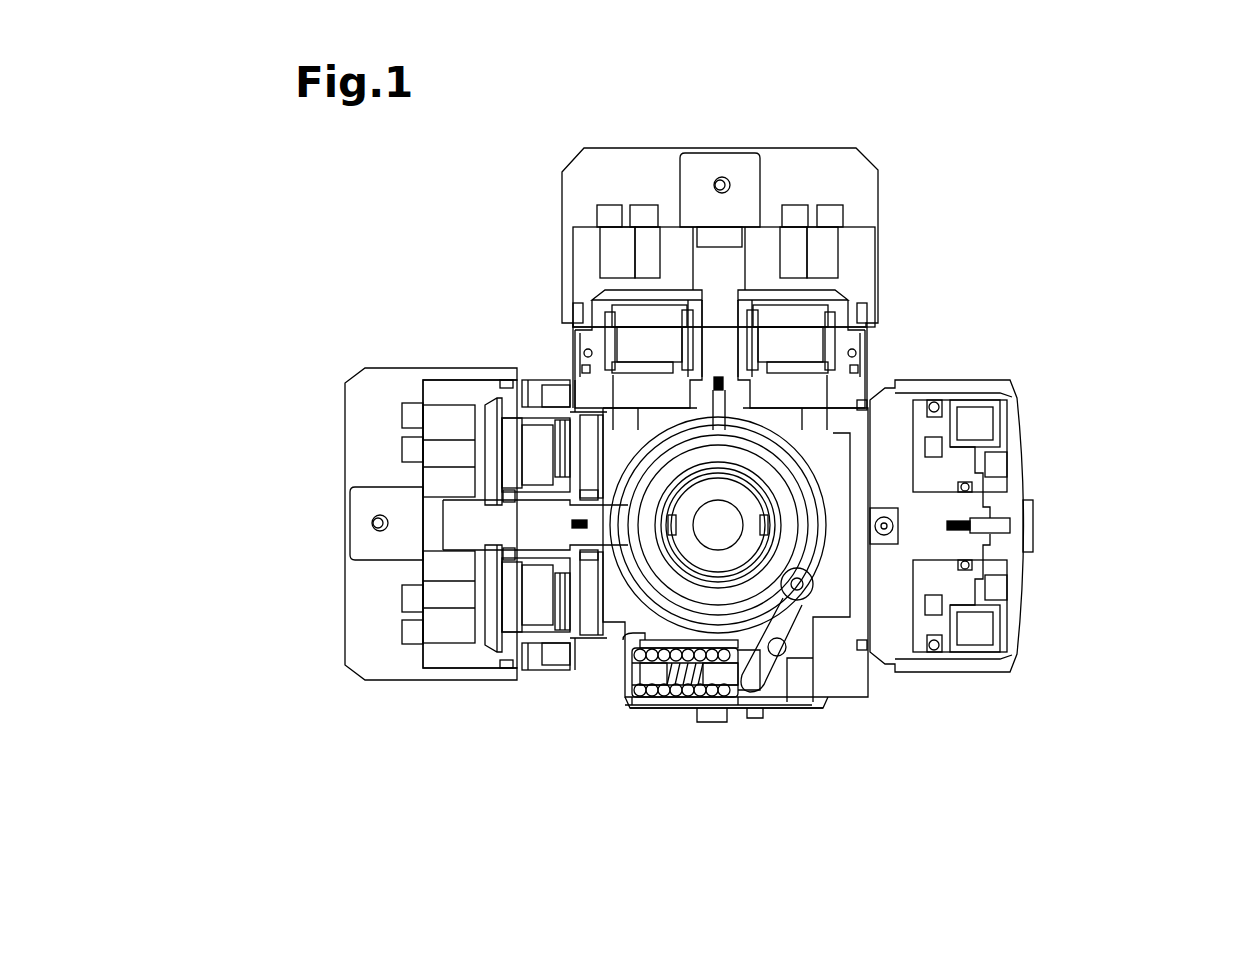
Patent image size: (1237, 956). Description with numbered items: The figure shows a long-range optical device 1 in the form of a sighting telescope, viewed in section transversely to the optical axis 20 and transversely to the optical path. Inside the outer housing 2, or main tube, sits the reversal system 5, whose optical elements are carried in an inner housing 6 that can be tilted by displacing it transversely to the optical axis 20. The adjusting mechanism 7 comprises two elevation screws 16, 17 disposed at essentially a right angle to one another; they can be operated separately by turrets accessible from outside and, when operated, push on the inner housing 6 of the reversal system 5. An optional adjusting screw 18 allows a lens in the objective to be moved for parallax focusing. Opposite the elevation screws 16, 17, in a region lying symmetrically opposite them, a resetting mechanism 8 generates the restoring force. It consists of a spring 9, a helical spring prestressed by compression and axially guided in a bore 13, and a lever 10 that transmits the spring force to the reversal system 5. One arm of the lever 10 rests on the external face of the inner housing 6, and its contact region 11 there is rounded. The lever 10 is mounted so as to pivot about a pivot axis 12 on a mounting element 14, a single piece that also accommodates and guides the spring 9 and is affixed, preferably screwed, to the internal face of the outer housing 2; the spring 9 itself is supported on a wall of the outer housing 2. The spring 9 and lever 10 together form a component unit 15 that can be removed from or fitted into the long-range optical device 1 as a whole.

The long-range optical device 1 is at (1084, 186).
The outer housing 2 is at (835, 672).
The reversal system 5 is at (790, 470).
The inner housing 6 is at (783, 655).
The adjusting mechanism 7 is at (837, 147).
The resetting mechanism 8 is at (769, 700).
The spring 9 is at (663, 697).
The lever 10 is at (813, 578).
The region 11 is at (807, 598).
The pivot axis 12 is at (792, 660).
The bore 13 is at (700, 705).
The mounting element 14 is at (633, 622).
The component unit 15 is at (690, 712).
The elevation screw 16 is at (487, 356).
The elevation screw 17 is at (559, 226).
The adjusting screw 18 is at (1020, 382).
The optical axis 20 is at (718, 525).